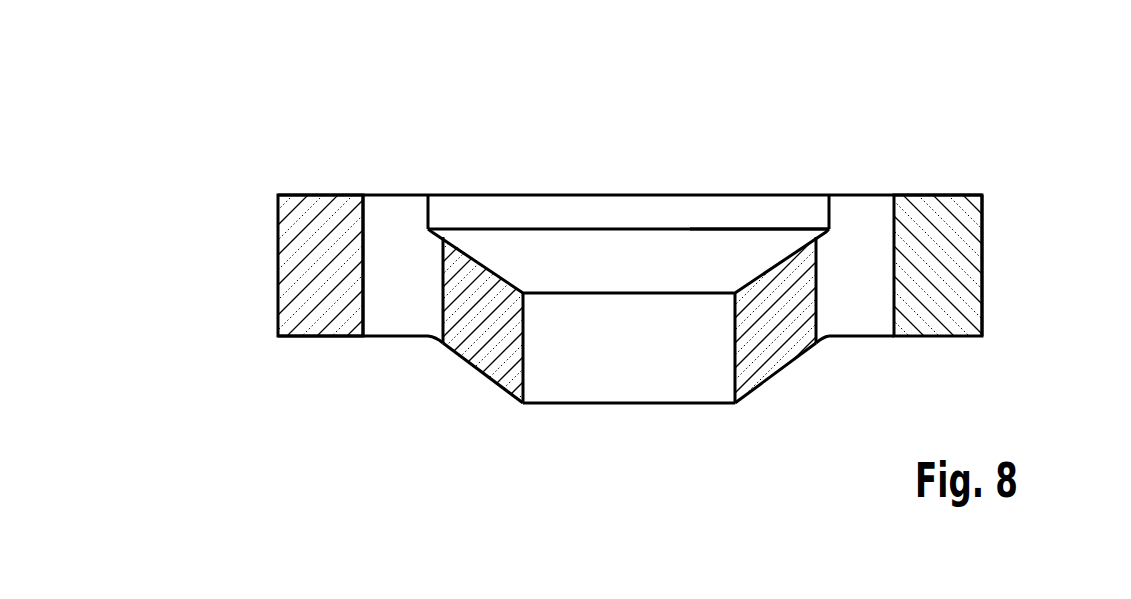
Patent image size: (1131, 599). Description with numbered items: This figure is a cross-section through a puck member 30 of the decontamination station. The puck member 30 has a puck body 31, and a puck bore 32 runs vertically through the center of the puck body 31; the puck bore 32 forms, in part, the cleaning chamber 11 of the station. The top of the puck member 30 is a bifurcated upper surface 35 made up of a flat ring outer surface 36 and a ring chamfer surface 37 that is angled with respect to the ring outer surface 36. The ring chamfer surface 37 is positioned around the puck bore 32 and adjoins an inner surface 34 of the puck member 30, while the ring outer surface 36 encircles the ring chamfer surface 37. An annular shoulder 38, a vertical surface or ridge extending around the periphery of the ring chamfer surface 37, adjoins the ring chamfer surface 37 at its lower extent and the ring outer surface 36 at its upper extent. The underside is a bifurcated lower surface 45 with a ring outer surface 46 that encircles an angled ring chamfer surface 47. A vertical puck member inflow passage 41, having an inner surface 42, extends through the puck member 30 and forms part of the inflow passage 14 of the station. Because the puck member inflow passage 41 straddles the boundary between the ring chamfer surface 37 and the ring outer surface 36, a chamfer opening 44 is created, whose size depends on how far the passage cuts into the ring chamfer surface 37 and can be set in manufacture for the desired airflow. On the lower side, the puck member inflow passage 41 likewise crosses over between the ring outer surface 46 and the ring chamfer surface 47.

The puck member 30 is at (1015, 188).
The puck body 31 is at (982, 278).
The puck bore 32 is at (682, 416).
The cleaning chamber 11 is at (698, 385).
The inner surface 34 is at (523, 388).
The bifurcated upper surface 35 is at (462, 177).
The ring outer surface 36 is at (331, 188).
The ring chamfer surface 37 is at (482, 262).
The annular shoulder 38 is at (823, 207).
The inflow passage 14 is at (635, 210).
The puck member inflow passage 41 is at (397, 205).
The inner surface 42 is at (378, 235).
The chamfer opening 44 is at (438, 236).
The bifurcated lower surface 45 is at (335, 362).
The ring outer surface 46 is at (297, 342).
The ring chamfer surface 47 is at (467, 368).